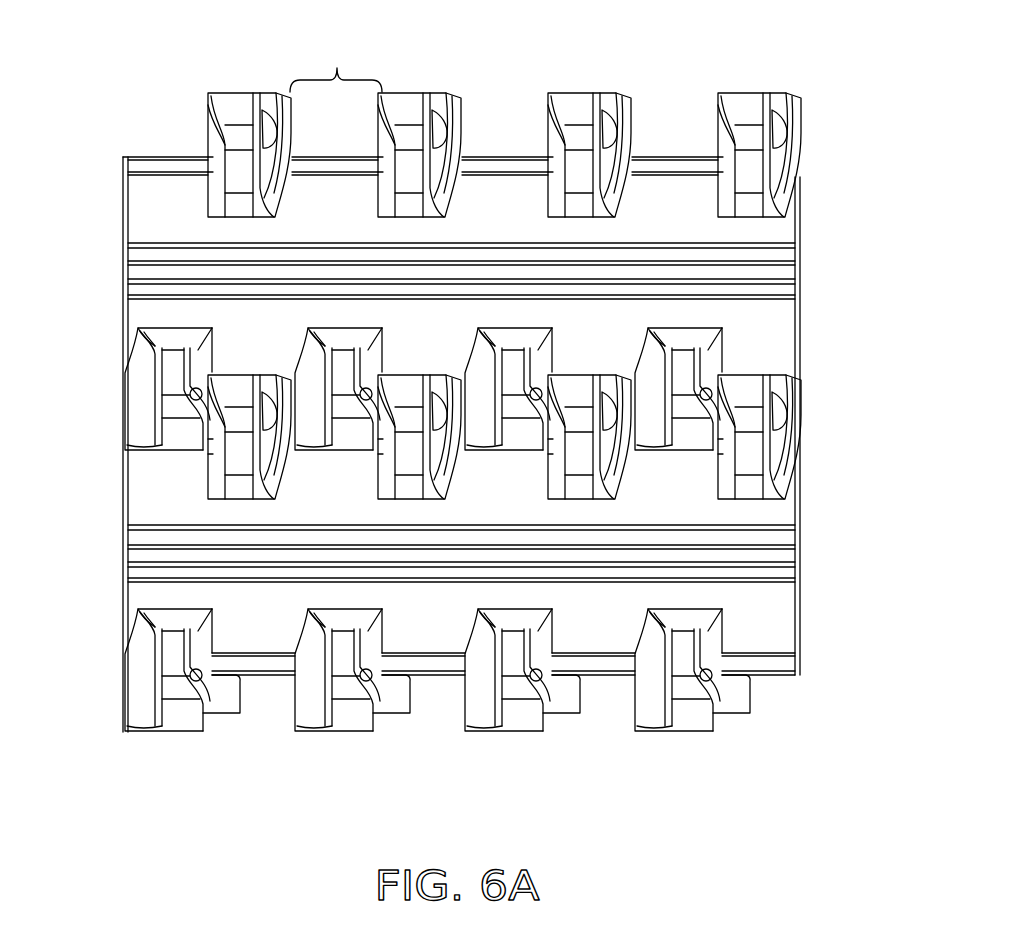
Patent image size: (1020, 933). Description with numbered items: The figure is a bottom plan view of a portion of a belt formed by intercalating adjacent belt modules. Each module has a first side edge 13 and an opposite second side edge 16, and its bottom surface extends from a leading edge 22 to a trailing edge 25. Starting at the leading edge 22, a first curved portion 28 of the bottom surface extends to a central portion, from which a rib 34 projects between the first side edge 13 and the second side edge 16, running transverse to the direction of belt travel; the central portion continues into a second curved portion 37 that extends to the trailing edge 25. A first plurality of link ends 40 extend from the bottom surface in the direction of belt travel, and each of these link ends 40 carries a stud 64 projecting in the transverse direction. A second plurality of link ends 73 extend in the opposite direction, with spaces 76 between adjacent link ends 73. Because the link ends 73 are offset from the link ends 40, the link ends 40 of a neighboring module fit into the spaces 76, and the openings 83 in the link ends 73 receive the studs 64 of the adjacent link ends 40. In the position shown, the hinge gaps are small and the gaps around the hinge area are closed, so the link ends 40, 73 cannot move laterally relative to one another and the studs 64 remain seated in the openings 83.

The first side edge 13 is at (123, 320).
The second side edge 16 is at (800, 323).
The leading edge 22 is at (613, 675).
The trailing edge 25 is at (676, 152).
The first curved portion 28 is at (435, 663).
The rib 34 is at (770, 273).
The second curved portion 37 is at (512, 165).
The first plurality of link ends 40 is at (177, 723).
The stud 64 is at (227, 707).
The second plurality of link ends 73 is at (232, 104).
The spaces 76 is at (336, 66).
The openings 83 is at (440, 125).